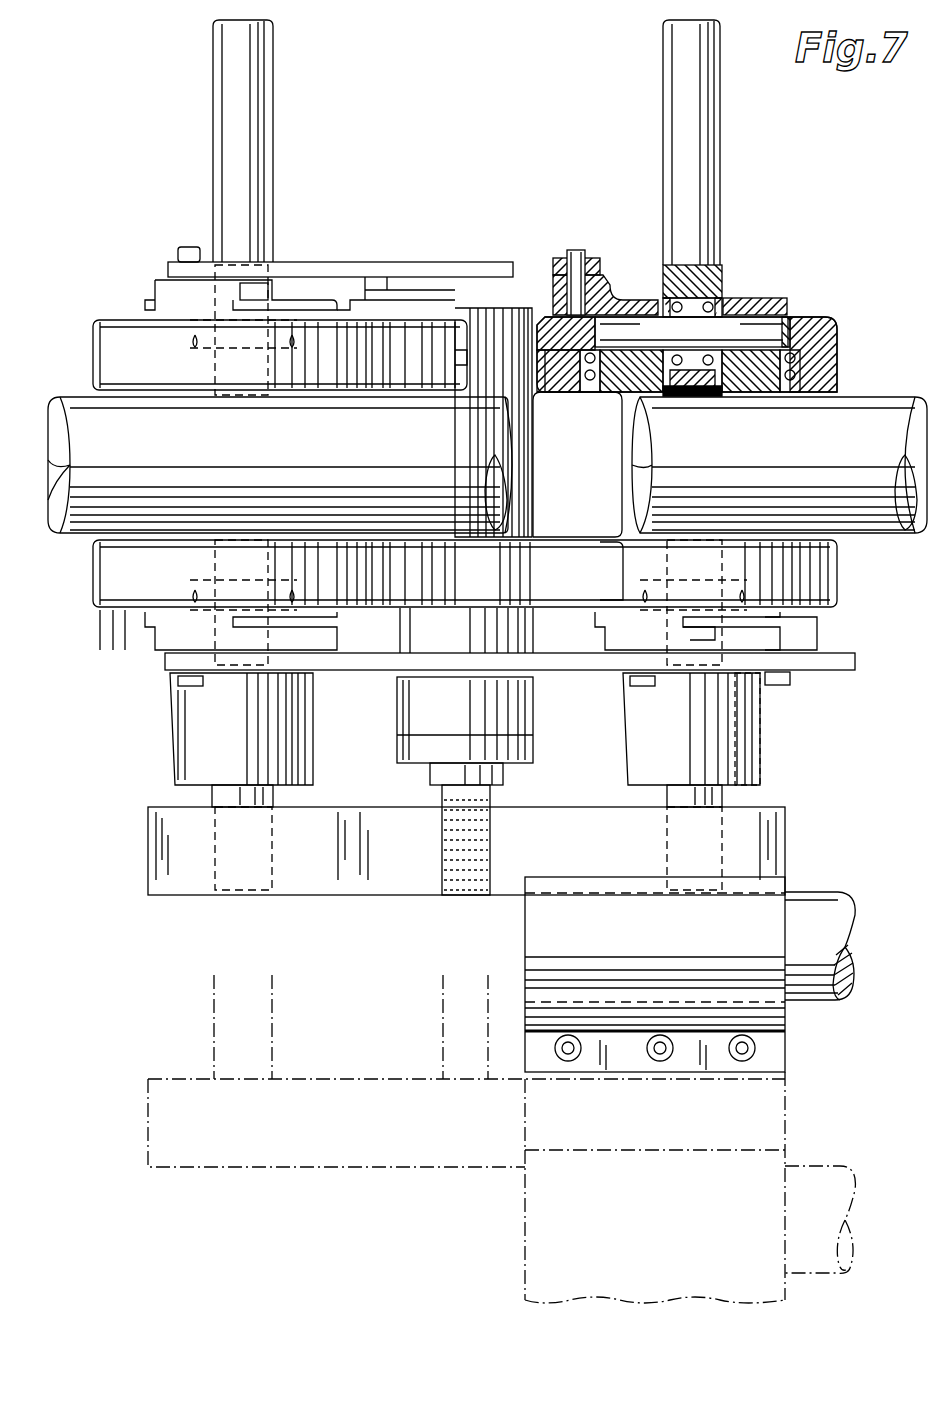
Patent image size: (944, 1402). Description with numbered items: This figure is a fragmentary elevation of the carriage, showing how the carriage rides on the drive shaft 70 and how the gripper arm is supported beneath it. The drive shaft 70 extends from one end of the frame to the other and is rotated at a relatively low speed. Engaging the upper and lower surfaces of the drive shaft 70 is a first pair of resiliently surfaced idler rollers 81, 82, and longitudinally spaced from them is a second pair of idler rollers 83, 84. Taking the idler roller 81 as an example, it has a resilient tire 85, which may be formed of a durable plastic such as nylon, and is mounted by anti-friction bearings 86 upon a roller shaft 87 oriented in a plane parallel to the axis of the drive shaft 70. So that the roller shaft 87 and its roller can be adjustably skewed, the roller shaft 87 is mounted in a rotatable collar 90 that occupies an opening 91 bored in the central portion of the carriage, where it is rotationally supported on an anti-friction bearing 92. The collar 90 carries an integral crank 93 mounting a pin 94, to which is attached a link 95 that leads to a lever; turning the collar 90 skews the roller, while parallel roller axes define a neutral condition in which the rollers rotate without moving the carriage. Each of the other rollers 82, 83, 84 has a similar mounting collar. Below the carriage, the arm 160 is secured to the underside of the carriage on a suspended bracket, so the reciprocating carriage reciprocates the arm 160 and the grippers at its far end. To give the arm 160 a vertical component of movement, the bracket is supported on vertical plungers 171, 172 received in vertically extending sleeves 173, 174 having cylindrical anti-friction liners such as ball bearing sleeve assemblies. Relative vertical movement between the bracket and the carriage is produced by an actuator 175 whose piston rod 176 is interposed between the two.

The drive shaft 70 is at (800, 452).
The idler roller 81 is at (722, 285).
The idler roller 82 is at (688, 535).
The idler roller 83 is at (238, 395).
The idler roller 84 is at (250, 540).
The resilient tire 85 is at (700, 265).
The anti-friction bearings 86 is at (722, 305).
The roller shaft 87 is at (712, 347).
The rotatable collar 90 is at (775, 305).
The opening 91 is at (790, 322).
The anti-friction bearing 92 is at (590, 388).
The crank 93 is at (600, 288).
The pin 94 is at (575, 252).
The link 95 is at (553, 266).
The arm 160 is at (808, 1000).
The vertical plunger 171 is at (275, 795).
The vertical plunger 172 is at (680, 800).
The sleeve 173 is at (178, 752).
The sleeve 174 is at (762, 745).
The actuator 175 is at (533, 740).
The piston rod 176 is at (495, 800).